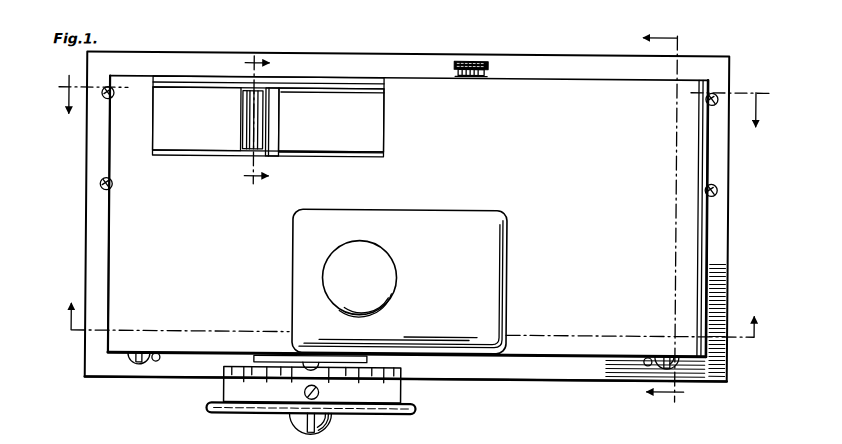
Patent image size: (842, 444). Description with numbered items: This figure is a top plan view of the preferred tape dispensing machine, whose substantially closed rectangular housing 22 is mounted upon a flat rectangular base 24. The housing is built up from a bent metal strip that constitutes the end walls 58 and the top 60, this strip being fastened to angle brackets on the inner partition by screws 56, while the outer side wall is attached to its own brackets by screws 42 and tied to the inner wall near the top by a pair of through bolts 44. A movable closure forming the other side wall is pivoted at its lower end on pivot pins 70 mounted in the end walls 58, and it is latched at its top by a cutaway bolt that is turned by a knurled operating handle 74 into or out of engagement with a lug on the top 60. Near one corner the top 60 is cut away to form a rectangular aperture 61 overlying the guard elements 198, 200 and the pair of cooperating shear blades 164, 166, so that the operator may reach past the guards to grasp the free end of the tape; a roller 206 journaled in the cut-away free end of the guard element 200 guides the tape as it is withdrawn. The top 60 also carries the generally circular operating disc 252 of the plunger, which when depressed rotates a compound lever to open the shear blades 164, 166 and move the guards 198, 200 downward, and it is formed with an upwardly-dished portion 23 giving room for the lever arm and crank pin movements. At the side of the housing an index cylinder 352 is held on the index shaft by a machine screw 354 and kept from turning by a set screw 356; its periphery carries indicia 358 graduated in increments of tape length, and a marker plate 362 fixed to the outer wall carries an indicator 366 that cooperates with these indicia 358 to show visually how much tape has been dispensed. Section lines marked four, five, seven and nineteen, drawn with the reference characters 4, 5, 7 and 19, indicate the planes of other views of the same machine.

The section line 4- 4 is at (412, 113).
The section line 5- 5 is at (405, 310).
The section line 7- 7 is at (652, 227).
The section line 19- 19 is at (267, 120).
The housing 22 is at (122, 221).
The upwardly-dished portion 23 is at (490, 212).
The base 24 is at (365, 62).
The screws 42 is at (160, 355).
The through bolts 44 is at (128, 372).
The screws 56 is at (100, 189).
The end walls 58 is at (108, 250).
The top 60 is at (693, 241).
The rectangular aperture 61 is at (322, 158).
The pivot pins 70 is at (104, 91).
The knurled operating handle 74 is at (470, 60).
The shear blade 164 is at (275, 109).
The shear blade 166 is at (269, 132).
The guard element 198 is at (377, 139).
The guard element 200 is at (178, 141).
The roller 206 is at (248, 143).
The operating disc 252 is at (392, 274).
The index cylinder 352 is at (232, 415).
The machine screw 354 is at (323, 426).
The set screw 356 is at (321, 396).
The indicia 358 is at (228, 383).
The marker plate 362 is at (283, 357).
The indicator 366 is at (312, 371).